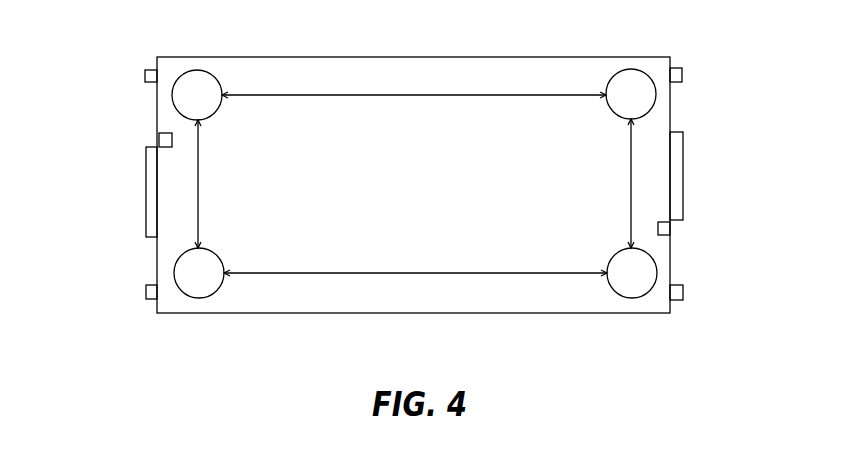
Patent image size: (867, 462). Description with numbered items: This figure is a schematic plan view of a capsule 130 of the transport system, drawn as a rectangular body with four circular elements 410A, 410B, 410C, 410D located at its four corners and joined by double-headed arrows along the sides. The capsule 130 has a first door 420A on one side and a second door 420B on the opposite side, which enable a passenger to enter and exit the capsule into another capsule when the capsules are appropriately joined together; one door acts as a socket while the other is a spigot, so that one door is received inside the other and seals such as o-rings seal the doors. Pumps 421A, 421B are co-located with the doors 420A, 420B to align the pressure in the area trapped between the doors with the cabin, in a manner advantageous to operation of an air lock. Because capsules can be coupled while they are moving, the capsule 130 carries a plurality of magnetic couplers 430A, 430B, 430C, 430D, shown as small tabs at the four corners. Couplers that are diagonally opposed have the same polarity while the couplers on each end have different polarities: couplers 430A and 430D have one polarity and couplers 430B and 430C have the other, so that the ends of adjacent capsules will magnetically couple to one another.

The capsule 130 is at (530, 57).
The wheel 410A is at (197, 78).
The wheel 410B is at (200, 292).
The wheel 410C is at (630, 77).
The wheel 410D is at (633, 292).
The first door 420A is at (152, 190).
The second door 420B is at (677, 177).
The pump 421A is at (160, 136).
The pump 421B is at (667, 227).
The magnetic coupler 430A is at (147, 77).
The magnetic coupler 430B is at (150, 292).
The magnetic coupler 430C is at (682, 78).
The magnetic coupler 430D is at (683, 293).